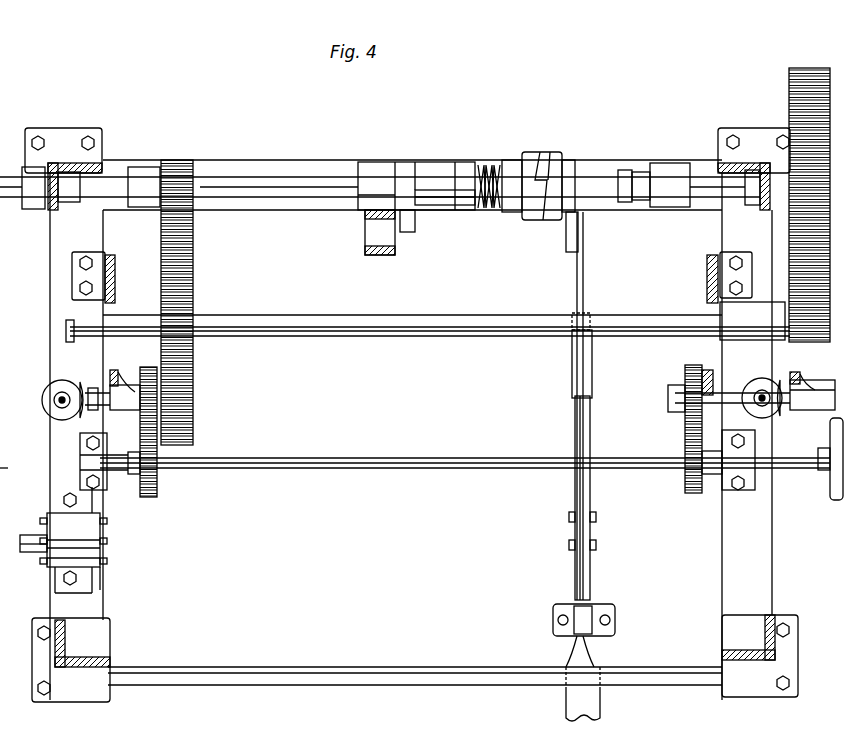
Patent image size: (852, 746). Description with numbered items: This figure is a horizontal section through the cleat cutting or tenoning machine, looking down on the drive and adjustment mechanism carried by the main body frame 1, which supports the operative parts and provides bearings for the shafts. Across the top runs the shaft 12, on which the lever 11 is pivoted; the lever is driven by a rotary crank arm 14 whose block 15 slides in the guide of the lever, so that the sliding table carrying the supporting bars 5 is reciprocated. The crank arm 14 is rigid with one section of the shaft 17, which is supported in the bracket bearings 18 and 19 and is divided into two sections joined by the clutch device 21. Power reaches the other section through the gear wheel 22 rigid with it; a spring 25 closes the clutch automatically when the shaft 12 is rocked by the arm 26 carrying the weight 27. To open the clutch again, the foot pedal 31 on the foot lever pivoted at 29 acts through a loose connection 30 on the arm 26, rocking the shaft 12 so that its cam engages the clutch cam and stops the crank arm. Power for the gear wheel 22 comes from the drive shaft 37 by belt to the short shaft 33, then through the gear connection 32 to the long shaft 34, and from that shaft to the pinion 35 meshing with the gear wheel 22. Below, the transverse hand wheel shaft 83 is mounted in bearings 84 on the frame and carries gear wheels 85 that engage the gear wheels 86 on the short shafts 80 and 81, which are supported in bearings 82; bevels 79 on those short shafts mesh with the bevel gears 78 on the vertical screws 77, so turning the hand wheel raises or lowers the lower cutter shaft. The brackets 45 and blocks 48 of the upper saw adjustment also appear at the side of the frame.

The main body frame 1 is at (748, 165).
The supporting bars 5 is at (8, 450).
The lever 11 is at (370, 245).
The shaft 12 is at (276, 183).
The rotary crank arm 14 is at (412, 182).
The block 15 is at (413, 228).
The shaft 17 is at (706, 190).
The bracket bearing 18 is at (664, 175).
The bracket bearing 19 is at (448, 200).
The clutch device 21 is at (556, 165).
The gear wheel 22 is at (790, 100).
The spring 25 is at (487, 175).
The arm 26 is at (583, 280).
The weight 27 is at (595, 353).
The pivot 29 is at (594, 612).
The loose connection 30 is at (578, 412).
The foot pedal 31 is at (600, 705).
The gear connection 32 is at (195, 207).
The short shaft 33 is at (116, 182).
The long shaft 34 is at (318, 325).
The pinion 35 is at (795, 321).
The drive shaft 37 is at (24, 537).
The brackets 45 is at (45, 583).
The blocks 48 is at (42, 560).
The vertical screws 77 is at (60, 400).
The bevel gears 78 is at (56, 415).
The bevels 79 is at (82, 385).
The short shaft 80 is at (100, 406).
The short shaft 81 is at (726, 396).
The bearings 82 is at (808, 392).
The hand wheel shaft 83 is at (322, 470).
The bearings 84 is at (100, 478).
The gear wheels 85 is at (156, 478).
The gear wheels 86 is at (148, 370).